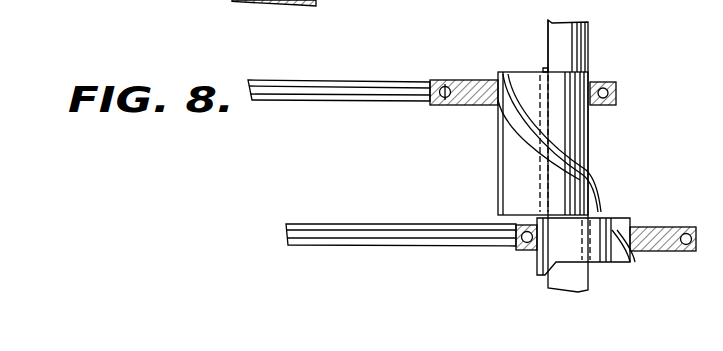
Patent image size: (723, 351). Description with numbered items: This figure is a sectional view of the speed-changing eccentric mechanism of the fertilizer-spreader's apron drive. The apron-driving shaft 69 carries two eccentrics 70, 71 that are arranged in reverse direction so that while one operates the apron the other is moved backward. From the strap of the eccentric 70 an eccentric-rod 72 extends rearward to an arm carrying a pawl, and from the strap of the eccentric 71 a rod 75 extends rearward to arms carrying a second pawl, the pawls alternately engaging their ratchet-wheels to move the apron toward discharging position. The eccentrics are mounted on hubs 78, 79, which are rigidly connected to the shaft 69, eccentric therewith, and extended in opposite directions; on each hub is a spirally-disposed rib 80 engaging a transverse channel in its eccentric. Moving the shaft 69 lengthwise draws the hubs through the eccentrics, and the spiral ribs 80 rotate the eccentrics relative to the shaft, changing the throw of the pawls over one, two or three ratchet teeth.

The apron-driving shaft 69 is at (586, 63).
The eccentric 70 is at (471, 82).
The eccentric 71 is at (668, 227).
The eccentric-rod 72 is at (350, 100).
The rod 75 is at (408, 224).
The hub 78 is at (498, 160).
The hub 79 is at (618, 219).
The spirally-disposed rib 80 is at (588, 166).